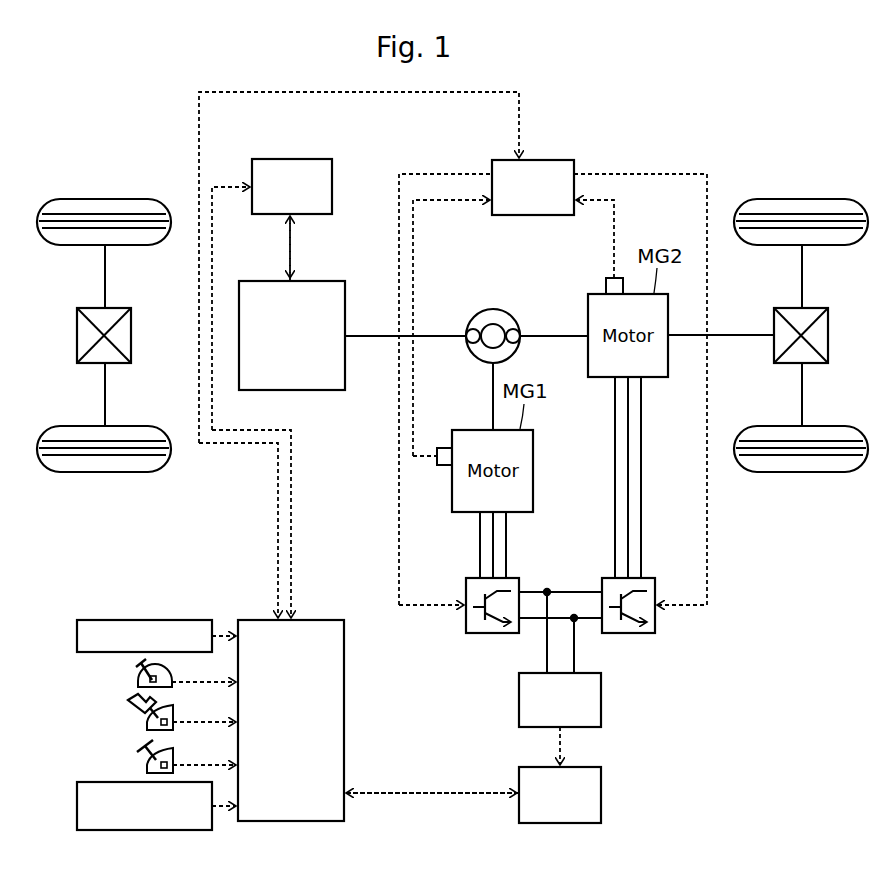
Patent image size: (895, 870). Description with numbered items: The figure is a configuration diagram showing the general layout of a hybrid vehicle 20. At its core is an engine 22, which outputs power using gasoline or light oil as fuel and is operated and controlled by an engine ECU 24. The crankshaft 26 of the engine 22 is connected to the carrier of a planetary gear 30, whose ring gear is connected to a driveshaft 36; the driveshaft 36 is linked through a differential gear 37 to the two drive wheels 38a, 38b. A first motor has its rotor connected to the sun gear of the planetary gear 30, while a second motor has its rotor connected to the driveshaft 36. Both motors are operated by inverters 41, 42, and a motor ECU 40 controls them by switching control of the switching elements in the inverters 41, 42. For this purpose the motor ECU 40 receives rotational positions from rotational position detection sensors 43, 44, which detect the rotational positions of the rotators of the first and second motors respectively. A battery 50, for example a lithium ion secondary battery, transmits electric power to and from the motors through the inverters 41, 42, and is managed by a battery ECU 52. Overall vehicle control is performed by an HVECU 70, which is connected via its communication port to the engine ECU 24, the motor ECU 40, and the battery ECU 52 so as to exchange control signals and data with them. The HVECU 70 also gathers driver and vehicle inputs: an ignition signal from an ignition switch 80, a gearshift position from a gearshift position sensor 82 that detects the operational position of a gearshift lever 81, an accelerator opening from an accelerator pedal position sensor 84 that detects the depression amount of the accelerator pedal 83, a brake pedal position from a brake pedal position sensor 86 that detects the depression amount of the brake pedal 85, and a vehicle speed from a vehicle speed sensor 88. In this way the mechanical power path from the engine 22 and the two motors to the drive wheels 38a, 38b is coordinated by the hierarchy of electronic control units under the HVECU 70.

The hybrid vehicle 20 is at (670, 118).
The engine 22 is at (316, 280).
The engine electronic control unit 24 is at (292, 158).
The crankshaft 26 is at (446, 333).
The planetary gear 30 is at (493, 308).
The driveshaft 36 is at (742, 333).
The differential gear 37 is at (814, 307).
The drive wheel 38a is at (802, 197).
The drive wheel 38b is at (800, 474).
The motor electronic control unit 40 is at (546, 158).
The inverter 41 is at (513, 577).
The inverter 42 is at (649, 577).
The rotational position detection sensor 43 is at (446, 447).
The rotational position detection sensor 44 is at (620, 277).
The battery 50 is at (603, 700).
The battery electronic control unit 52 is at (603, 795).
The hybrid electronic control unit 70 is at (317, 619).
The ignition switch 80 is at (76, 636).
The gearshift lever 81 is at (134, 665).
The gearshift position sensor 82 is at (150, 680).
The accelerator pedal 83 is at (138, 705).
The accelerator pedal position sensor 84 is at (155, 722).
The brake pedal 85 is at (138, 752).
The brake pedal position sensor 86 is at (155, 766).
The vehicle speed sensor 88 is at (76, 806).